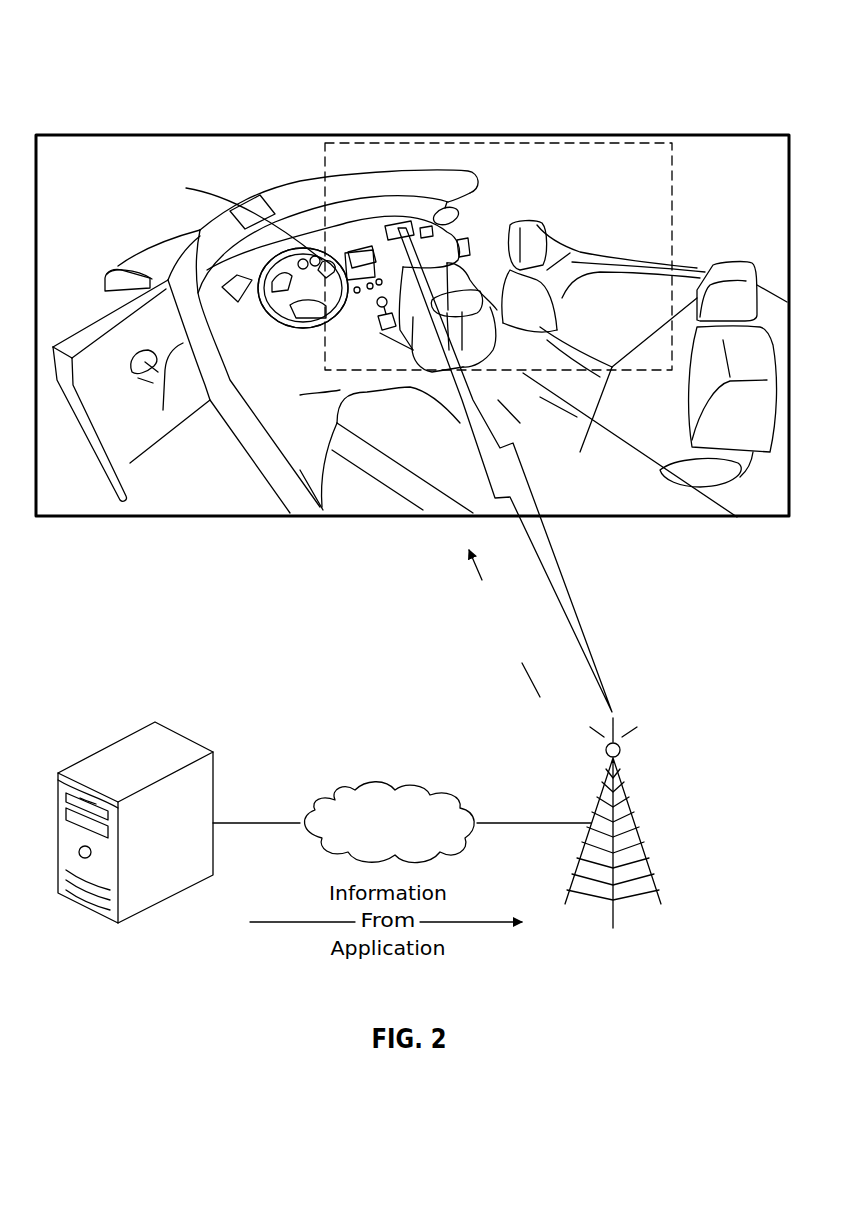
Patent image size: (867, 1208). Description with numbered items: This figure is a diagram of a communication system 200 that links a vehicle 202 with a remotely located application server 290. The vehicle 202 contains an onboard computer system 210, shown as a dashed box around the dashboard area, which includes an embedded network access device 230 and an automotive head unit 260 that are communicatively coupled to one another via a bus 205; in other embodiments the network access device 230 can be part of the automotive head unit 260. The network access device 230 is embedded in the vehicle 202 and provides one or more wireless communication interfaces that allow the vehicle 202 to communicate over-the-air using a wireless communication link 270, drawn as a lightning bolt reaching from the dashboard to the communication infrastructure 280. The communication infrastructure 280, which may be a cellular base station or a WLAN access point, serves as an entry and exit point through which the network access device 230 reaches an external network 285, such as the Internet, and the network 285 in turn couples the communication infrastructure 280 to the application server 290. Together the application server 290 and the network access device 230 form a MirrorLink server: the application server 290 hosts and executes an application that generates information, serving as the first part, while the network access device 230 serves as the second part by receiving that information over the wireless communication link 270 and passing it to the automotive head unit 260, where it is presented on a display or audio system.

The communication system 200 is at (126, 48).
The vehicle 202 is at (303, 248).
The bus 205 is at (355, 232).
The onboard computer system 210 is at (672, 218).
The network access device 230 is at (398, 222).
The automotive head unit 260 is at (452, 211).
The wireless communication link 270 is at (568, 587).
The communication infrastructure 280 is at (629, 796).
The network 285 is at (388, 788).
The application server 290 is at (183, 738).